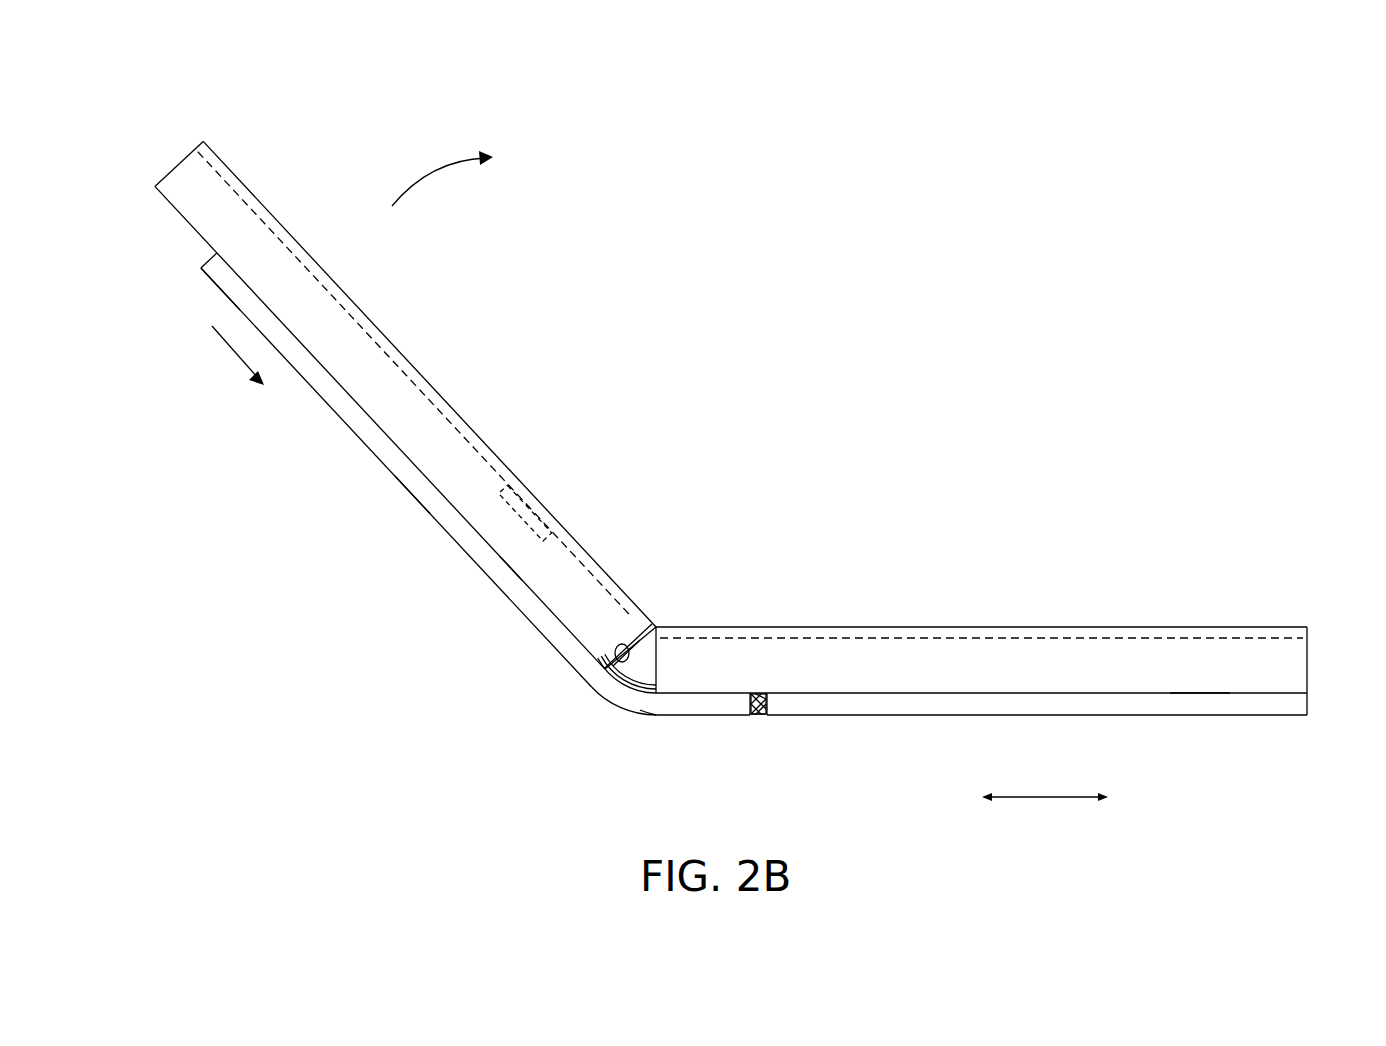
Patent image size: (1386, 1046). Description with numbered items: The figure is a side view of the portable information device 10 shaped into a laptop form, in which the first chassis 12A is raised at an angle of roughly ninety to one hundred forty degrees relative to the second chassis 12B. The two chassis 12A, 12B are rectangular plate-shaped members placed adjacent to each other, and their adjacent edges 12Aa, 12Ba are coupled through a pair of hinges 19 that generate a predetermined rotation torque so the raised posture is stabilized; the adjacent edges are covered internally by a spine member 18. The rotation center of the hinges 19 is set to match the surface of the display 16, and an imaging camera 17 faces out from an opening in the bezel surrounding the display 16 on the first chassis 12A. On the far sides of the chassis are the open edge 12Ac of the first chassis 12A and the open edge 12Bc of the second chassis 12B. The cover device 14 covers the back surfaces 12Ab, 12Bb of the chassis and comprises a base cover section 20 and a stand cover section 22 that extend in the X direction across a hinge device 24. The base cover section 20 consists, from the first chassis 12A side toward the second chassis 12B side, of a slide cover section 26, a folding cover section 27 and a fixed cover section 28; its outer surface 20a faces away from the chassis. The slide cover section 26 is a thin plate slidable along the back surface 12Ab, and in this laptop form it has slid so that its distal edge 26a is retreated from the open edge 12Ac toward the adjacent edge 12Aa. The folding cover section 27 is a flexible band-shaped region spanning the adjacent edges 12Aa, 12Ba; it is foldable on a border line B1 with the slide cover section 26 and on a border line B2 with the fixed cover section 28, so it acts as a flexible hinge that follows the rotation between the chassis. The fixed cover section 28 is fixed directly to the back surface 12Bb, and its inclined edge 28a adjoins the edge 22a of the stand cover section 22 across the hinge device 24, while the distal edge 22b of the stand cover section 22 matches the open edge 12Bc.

The portable information device 10 is at (171, 57).
The first chassis 12A is at (417, 343).
The adjacent edge 12Aa is at (608, 673).
The back surface 12Ab is at (358, 400).
The open edge 12Ac is at (174, 167).
The second chassis 12B is at (1102, 614).
The adjacent edge 12Ba is at (662, 626).
The back surface 12Bb is at (1199, 695).
The open edge 12Bc is at (1309, 658).
The cover device 14 is at (407, 521).
The display 16 is at (893, 632).
The imaging camera 17 is at (537, 503).
The spine member 18 is at (618, 697).
The hinge 19 is at (633, 648).
The base cover section 20 is at (360, 450).
The outer surface of first cover plate 20a is at (300, 376).
The stand cover section 22 is at (933, 717).
The edge 22a is at (763, 692).
The distal edge 22b is at (1309, 705).
The hinge device 24 is at (755, 695).
The slide cover section 26 is at (228, 282).
The distal edge 26a is at (203, 266).
The folding cover section 27 is at (553, 631).
The fixed cover section 28 is at (708, 705).
The edge 28a is at (757, 716).
The border line B1 is at (510, 567).
The border line B2 is at (663, 706).